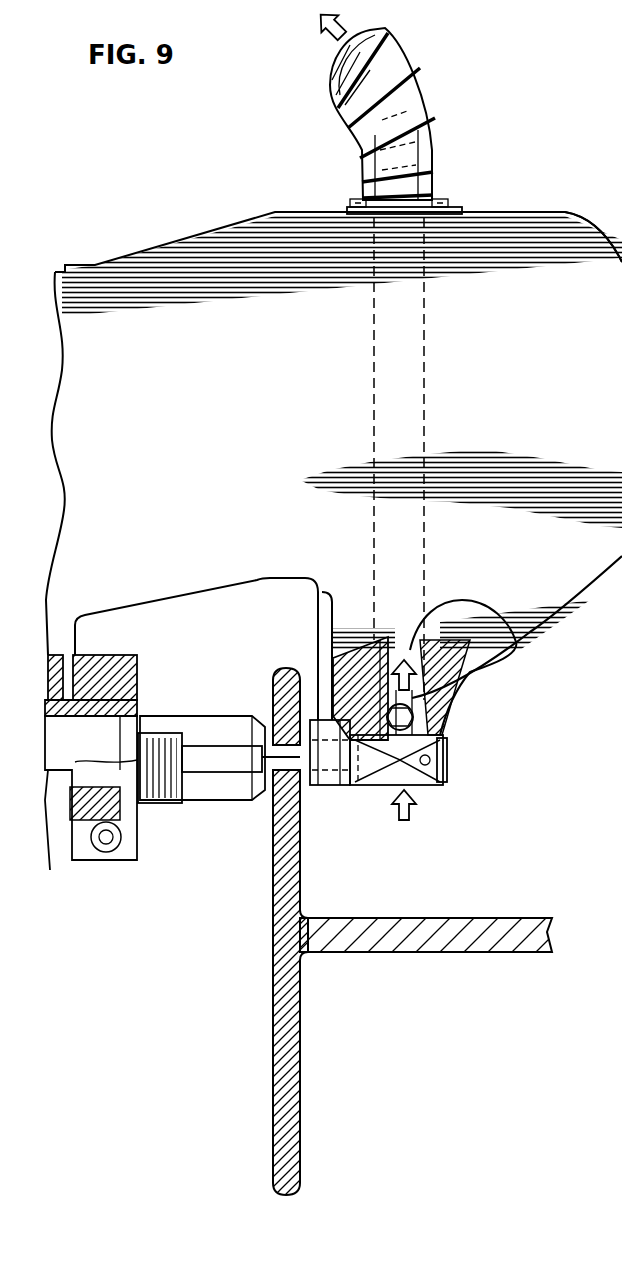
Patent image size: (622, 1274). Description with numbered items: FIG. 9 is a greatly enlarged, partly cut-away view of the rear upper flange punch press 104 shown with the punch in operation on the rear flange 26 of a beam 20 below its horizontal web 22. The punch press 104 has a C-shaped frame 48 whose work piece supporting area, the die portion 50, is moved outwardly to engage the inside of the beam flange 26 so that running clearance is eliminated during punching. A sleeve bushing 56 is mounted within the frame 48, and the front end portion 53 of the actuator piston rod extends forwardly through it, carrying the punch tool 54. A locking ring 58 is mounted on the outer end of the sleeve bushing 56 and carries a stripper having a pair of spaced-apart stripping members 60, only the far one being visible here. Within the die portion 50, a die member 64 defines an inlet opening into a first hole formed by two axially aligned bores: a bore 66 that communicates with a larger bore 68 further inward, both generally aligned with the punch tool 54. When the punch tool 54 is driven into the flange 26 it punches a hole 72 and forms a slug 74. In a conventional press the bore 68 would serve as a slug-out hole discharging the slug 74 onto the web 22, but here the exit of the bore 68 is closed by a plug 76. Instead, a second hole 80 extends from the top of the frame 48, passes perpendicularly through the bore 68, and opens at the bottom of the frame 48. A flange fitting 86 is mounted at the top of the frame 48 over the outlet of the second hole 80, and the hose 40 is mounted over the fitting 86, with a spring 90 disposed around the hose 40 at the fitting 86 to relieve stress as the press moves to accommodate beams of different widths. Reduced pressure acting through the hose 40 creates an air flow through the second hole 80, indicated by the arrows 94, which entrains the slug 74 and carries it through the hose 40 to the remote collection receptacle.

The beam 20 is at (410, 918).
The horizontal web 22 is at (497, 918).
The rear flange 26 is at (288, 668).
The hose 40 is at (330, 92).
The C-shaped frame 48 is at (492, 367).
The die portion 50 is at (470, 676).
The piston rod front end portion 53 is at (160, 803).
The punch tool 54 is at (208, 805).
The sleeve bushing 56 is at (137, 702).
The locking ring 58 is at (137, 660).
The stripping member 60 is at (207, 716).
The die member 64 is at (313, 786).
The bore 66 is at (358, 790).
The bore 68 is at (355, 682).
The hole 72 is at (265, 785).
The slug 74 is at (413, 717).
The plug 76 is at (447, 777).
The second hole 80 is at (518, 640).
The flange fitting 86 is at (398, 202).
The spring 90 is at (432, 118).
The arrows 94 is at (342, 40).
The second punch press 104 is at (564, 214).